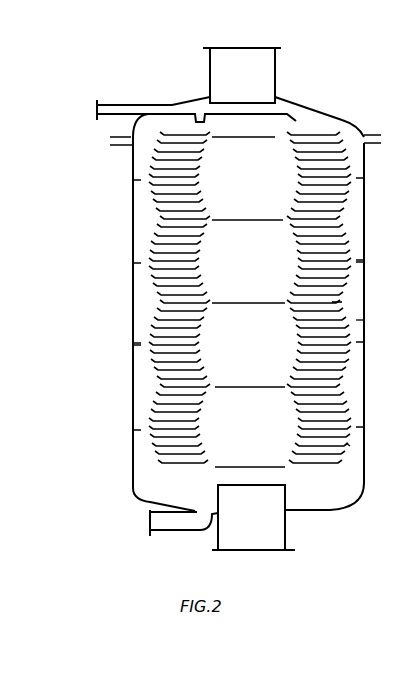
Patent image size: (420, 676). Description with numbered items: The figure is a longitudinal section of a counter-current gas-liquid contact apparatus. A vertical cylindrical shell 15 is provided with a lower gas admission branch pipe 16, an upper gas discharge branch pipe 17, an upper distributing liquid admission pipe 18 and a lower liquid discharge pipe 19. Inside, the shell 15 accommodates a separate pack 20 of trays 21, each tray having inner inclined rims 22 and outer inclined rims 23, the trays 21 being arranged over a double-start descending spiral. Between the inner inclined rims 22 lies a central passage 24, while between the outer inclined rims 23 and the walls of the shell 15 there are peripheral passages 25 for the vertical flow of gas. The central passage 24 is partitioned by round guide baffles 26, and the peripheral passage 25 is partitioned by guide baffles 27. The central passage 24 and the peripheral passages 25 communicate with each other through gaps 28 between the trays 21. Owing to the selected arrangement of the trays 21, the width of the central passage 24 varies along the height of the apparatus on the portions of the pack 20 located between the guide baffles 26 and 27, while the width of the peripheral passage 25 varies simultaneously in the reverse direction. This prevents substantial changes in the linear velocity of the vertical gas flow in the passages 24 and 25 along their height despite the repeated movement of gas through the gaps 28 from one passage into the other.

The vertical cylindrical shell 15 is at (364, 300).
The lower gas admission branch pipe 16 is at (285, 550).
The upper gas discharge branch pipe 17 is at (275, 68).
The upper distributing liquid admission pipe 18 is at (97, 108).
The lower liquid discharge pipe 19 is at (190, 530).
The pack of trays 20 is at (155, 368).
The trays 21 is at (305, 133).
The inner inclined rims 22 is at (307, 433).
The outer inclined rims 23 is at (350, 446).
The central passage 24 is at (237, 142).
The peripheral passages 25 is at (357, 363).
The round guide baffles 26 is at (272, 304).
The guide baffles 27 is at (137, 343).
The gaps 28 is at (338, 300).